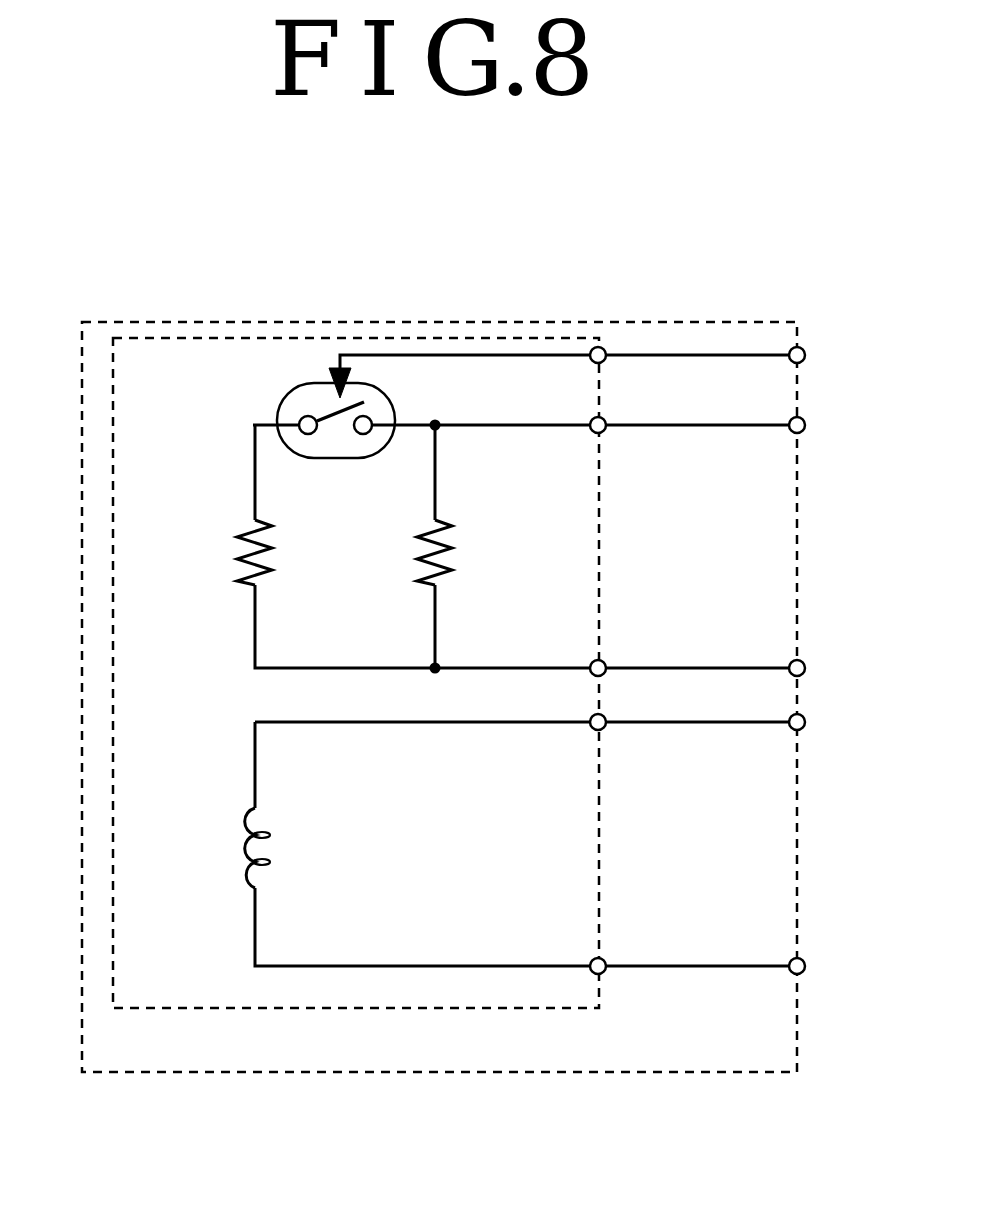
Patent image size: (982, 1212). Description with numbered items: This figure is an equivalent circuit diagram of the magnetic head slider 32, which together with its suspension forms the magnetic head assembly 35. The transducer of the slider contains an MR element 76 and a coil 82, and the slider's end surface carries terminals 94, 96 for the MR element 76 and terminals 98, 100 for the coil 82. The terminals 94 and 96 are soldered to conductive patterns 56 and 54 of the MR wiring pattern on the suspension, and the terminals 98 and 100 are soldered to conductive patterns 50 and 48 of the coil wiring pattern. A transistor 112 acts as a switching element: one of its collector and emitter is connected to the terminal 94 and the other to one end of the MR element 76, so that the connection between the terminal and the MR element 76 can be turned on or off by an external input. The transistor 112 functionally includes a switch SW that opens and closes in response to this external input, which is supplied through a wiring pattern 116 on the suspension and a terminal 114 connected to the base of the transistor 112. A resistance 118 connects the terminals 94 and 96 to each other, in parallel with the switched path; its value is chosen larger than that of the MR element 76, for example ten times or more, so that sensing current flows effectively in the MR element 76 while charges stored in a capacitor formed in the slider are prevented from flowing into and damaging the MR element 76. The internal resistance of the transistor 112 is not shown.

The magnetic head slider 32 is at (385, 1010).
The magnetic head assembly 35 is at (572, 1080).
The conductive pattern 48 is at (641, 966).
The conductive pattern 50 is at (641, 722).
The conductive pattern 54 is at (640, 668).
The conductive pattern 56 is at (622, 425).
The MR element 76 is at (238, 548).
The coil 82 is at (268, 850).
The terminal 94 is at (606, 433).
The terminal 96 is at (603, 665).
The terminal 98 is at (603, 730).
The terminal 100 is at (606, 961).
The transistor 112 is at (284, 397).
The terminal 114 is at (605, 351).
The wiring pattern 116 is at (697, 355).
The resistance 118 is at (449, 557).
The switch SW is at (319, 412).